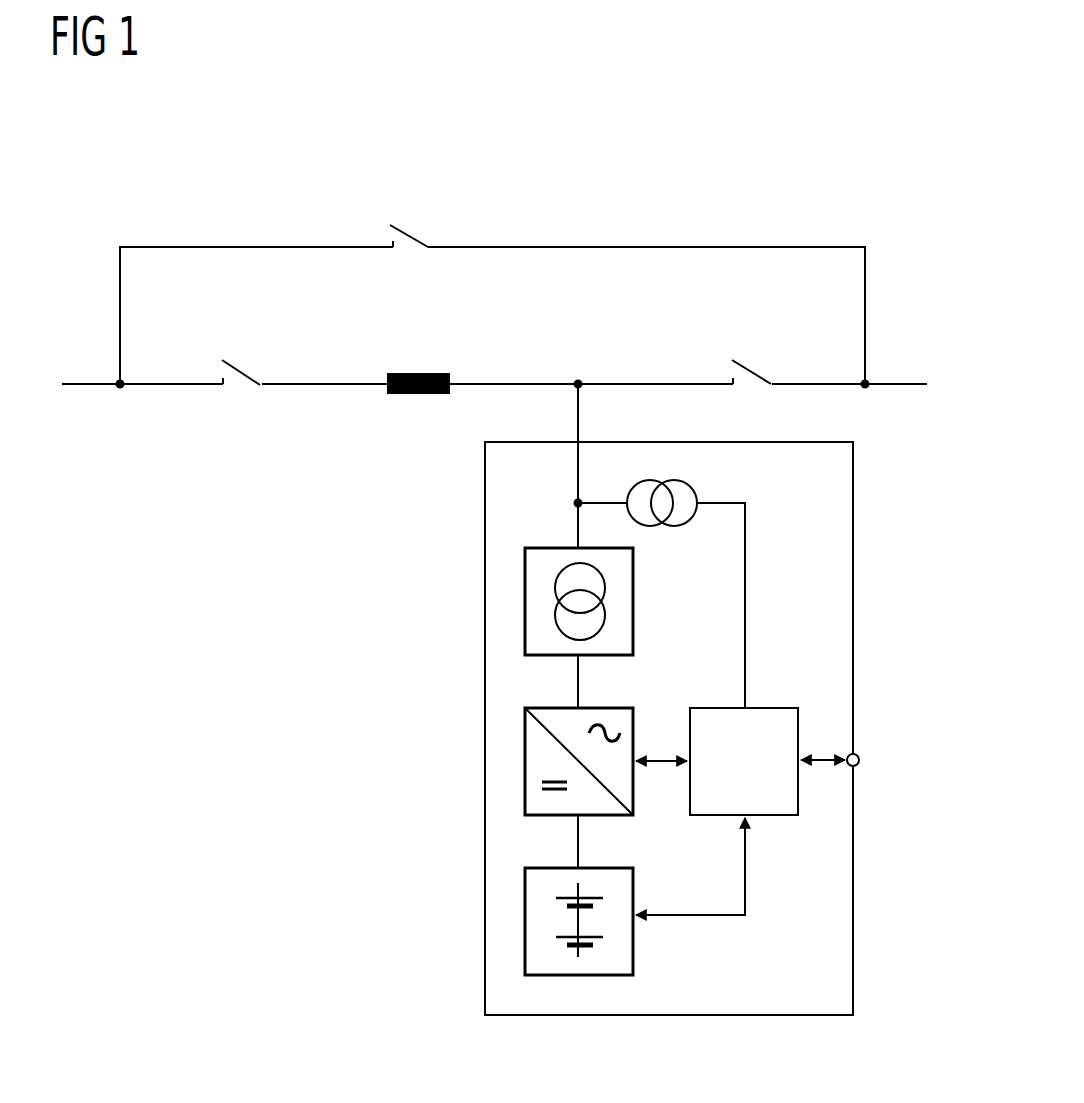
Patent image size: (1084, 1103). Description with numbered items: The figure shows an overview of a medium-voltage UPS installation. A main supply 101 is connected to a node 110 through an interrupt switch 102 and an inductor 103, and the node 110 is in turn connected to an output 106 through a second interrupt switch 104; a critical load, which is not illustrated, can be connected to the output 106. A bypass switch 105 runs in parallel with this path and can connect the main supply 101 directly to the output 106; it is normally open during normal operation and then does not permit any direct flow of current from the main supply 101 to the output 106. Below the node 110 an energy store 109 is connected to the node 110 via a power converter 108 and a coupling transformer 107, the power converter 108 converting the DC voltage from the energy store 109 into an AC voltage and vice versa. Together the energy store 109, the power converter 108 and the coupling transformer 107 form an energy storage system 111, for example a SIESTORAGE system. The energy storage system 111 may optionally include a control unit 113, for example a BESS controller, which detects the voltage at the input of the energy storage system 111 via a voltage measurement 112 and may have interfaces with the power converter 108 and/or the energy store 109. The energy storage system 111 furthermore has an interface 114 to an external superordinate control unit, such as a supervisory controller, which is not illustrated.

The main supply 101 is at (78, 383).
The interrupt switch 102 is at (245, 372).
The inductor 103 is at (425, 370).
The interrupt switch 104 is at (757, 372).
The bypass switch 105 is at (412, 232).
The output 106 is at (910, 382).
The coupling transformer 107 is at (525, 597).
The power converter 108 is at (525, 760).
The energy store 109 is at (525, 920).
The node 110 is at (580, 378).
The energy storage system 111 is at (853, 575).
The voltage measurement 112 is at (673, 528).
The control unit 113 is at (798, 788).
The interface 114 is at (859, 757).